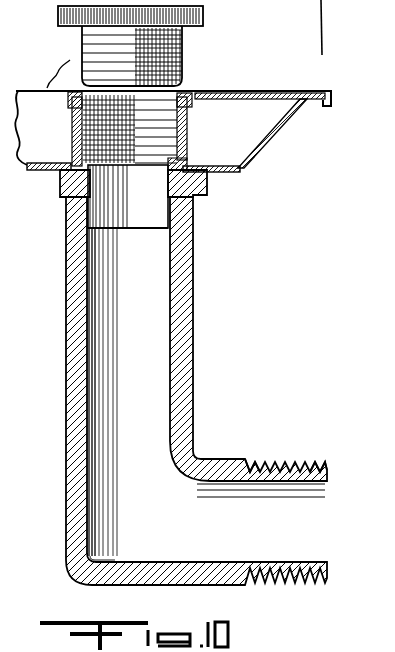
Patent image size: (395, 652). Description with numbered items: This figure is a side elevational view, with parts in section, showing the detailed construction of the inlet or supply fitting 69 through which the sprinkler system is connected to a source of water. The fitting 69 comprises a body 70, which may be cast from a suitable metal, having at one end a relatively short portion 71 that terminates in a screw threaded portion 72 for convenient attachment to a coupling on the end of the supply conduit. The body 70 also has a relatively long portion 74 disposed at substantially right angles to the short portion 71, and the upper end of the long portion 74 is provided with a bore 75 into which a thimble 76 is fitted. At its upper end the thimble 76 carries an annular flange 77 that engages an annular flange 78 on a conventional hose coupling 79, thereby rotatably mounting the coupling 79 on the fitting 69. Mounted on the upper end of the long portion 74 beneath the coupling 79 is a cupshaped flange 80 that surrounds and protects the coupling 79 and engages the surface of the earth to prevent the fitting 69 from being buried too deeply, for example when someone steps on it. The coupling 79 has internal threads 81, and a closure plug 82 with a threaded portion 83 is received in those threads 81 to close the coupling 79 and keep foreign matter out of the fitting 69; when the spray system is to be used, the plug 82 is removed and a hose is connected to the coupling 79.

The inlet or supply fitting 69 is at (203, 326).
The body 70 is at (65, 388).
The relatively short portion 71 is at (238, 461).
The screw threaded portion 72 is at (297, 468).
The relatively long portion 74 is at (190, 259).
The bore 75 is at (174, 210).
The thimble 76 is at (172, 225).
The annular flange 77 is at (186, 142).
The annular flange 78 is at (186, 157).
The hose coupling 79 is at (186, 123).
The cupshaped flange 80 is at (265, 137).
The internal threads 81 is at (186, 100).
The closure plug 82 is at (203, 21).
The threaded portion 83 is at (189, 41).